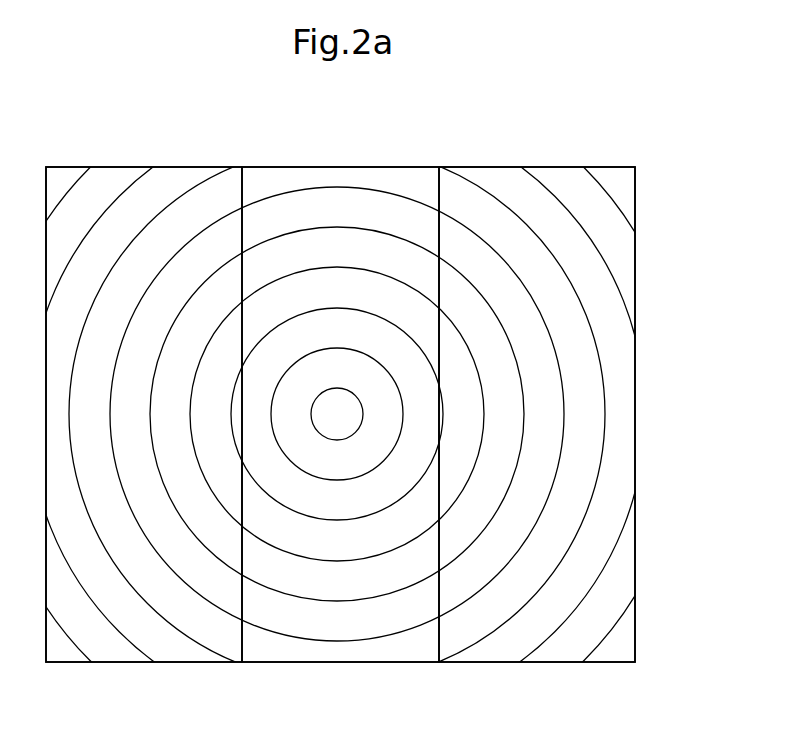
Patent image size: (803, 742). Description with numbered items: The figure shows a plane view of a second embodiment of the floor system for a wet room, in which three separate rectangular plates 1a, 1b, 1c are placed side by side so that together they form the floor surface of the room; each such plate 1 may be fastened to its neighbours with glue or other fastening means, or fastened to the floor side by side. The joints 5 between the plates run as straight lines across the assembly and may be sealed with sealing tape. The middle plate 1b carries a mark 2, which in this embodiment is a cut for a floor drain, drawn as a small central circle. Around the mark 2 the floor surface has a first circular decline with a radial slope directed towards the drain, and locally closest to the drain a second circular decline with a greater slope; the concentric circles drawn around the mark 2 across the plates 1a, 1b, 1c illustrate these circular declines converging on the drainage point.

The plate 1 is at (567, 113).
The first rectangular plate 1a is at (168, 167).
The middle rectangular plate 1b is at (316, 167).
The third rectangular plate 1c is at (492, 167).
The mark 2 is at (363, 414).
The joints 5 is at (242, 662).